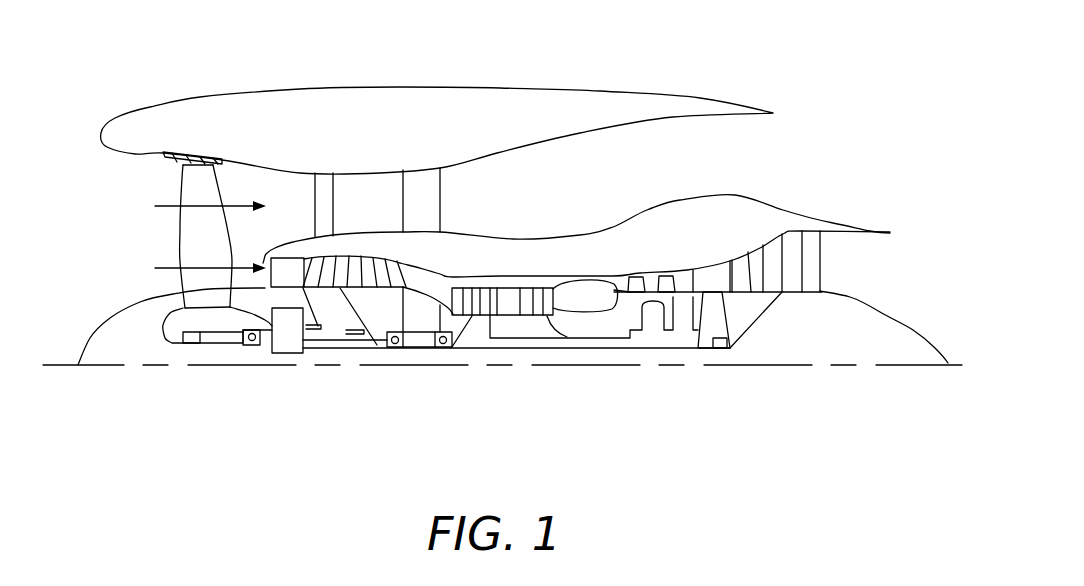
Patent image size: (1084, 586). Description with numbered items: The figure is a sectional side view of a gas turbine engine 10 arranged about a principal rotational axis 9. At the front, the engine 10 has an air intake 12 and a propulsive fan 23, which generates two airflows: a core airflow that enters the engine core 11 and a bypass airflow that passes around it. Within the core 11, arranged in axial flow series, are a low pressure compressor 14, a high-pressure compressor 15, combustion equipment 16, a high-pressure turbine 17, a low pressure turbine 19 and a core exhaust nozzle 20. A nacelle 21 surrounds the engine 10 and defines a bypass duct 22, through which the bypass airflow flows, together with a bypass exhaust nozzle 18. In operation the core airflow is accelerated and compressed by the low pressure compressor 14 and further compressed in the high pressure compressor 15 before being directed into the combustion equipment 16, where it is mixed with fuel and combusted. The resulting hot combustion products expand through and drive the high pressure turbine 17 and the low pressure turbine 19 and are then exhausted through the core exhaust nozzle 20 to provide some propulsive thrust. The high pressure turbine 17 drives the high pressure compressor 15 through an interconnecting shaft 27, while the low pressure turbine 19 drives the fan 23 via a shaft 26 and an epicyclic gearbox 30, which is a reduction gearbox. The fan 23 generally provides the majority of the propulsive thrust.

The principal rotational axis 9 is at (830, 367).
The gas turbine engine 10 is at (176, 98).
The engine core 11 is at (556, 262).
The air intake 12 is at (110, 172).
The low pressure compressor 14 is at (358, 265).
The high-pressure compressor 15 is at (508, 298).
The combustion equipment 16 is at (585, 298).
The high-pressure turbine 17 is at (653, 282).
The bypass exhaust nozzle 18 is at (770, 150).
The low pressure turbine 19 is at (793, 247).
The core exhaust nozzle 20 is at (850, 265).
The nacelle 21 is at (417, 100).
The bypass duct 22 is at (717, 168).
The propulsive fan 23 is at (185, 231).
The shaft 26 is at (502, 352).
The interconnecting shaft 27 is at (547, 337).
The epicyclic gearbox 30 is at (283, 342).